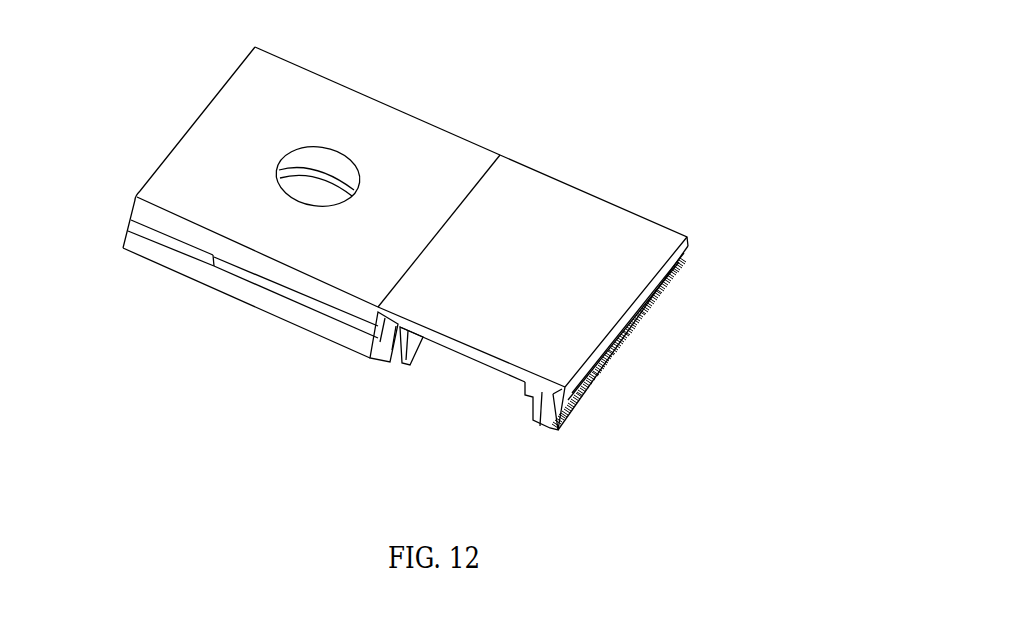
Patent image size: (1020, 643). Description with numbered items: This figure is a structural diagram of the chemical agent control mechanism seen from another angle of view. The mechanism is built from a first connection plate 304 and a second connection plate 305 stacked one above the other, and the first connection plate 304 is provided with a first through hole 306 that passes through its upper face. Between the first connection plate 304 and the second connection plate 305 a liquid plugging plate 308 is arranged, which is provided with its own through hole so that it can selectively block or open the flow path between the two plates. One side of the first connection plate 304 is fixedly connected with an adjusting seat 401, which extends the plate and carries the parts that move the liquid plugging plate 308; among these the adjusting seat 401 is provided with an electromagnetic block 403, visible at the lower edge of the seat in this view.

The first connection plate 304 is at (263, 115).
The first through hole 306 is at (340, 157).
The adjusting seat 401 is at (543, 223).
The second connection plate 305 is at (205, 275).
The liquid plugging plate 308 is at (332, 305).
The electromagnetic block 403 is at (552, 432).